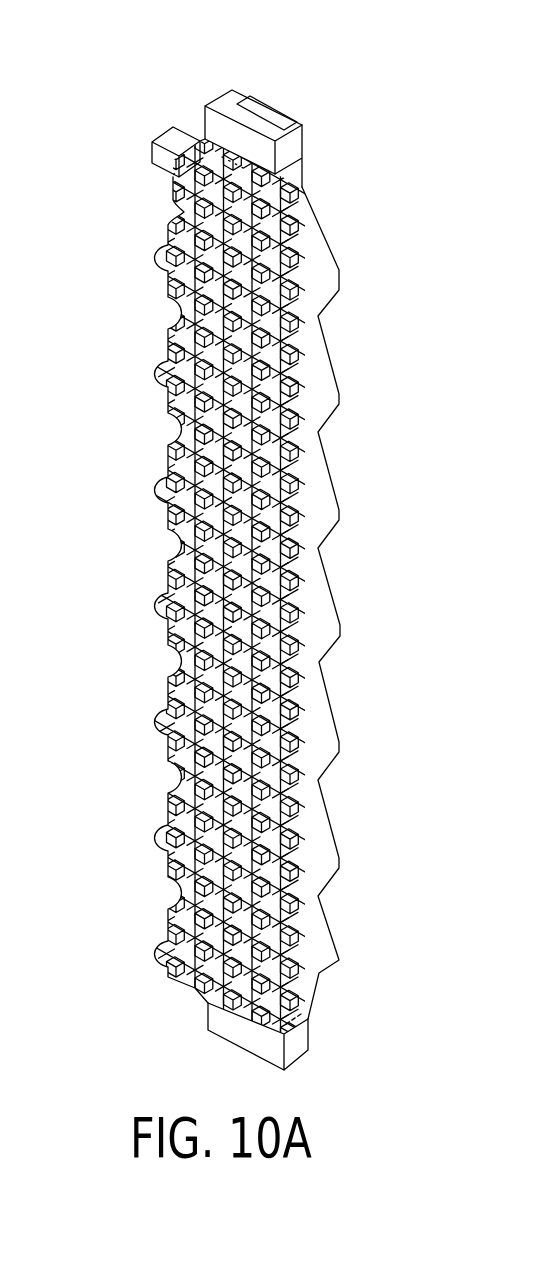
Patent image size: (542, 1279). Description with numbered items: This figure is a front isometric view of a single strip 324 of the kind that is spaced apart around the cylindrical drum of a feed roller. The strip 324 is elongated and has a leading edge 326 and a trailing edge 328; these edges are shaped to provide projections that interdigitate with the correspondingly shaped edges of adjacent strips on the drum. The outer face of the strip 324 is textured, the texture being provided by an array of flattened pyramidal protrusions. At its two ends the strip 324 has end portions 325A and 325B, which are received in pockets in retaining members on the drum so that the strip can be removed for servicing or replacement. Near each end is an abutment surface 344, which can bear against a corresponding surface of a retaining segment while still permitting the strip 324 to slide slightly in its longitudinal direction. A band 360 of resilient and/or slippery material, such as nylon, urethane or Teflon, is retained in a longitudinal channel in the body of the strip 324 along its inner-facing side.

The strip 324 is at (163, 187).
The end portion 325A is at (281, 163).
The end portion 325B is at (294, 1040).
The leading edge 326 is at (322, 580).
The trailing edge 328 is at (165, 488).
The abutment surface 344 is at (270, 181).
The band 360 is at (275, 110).